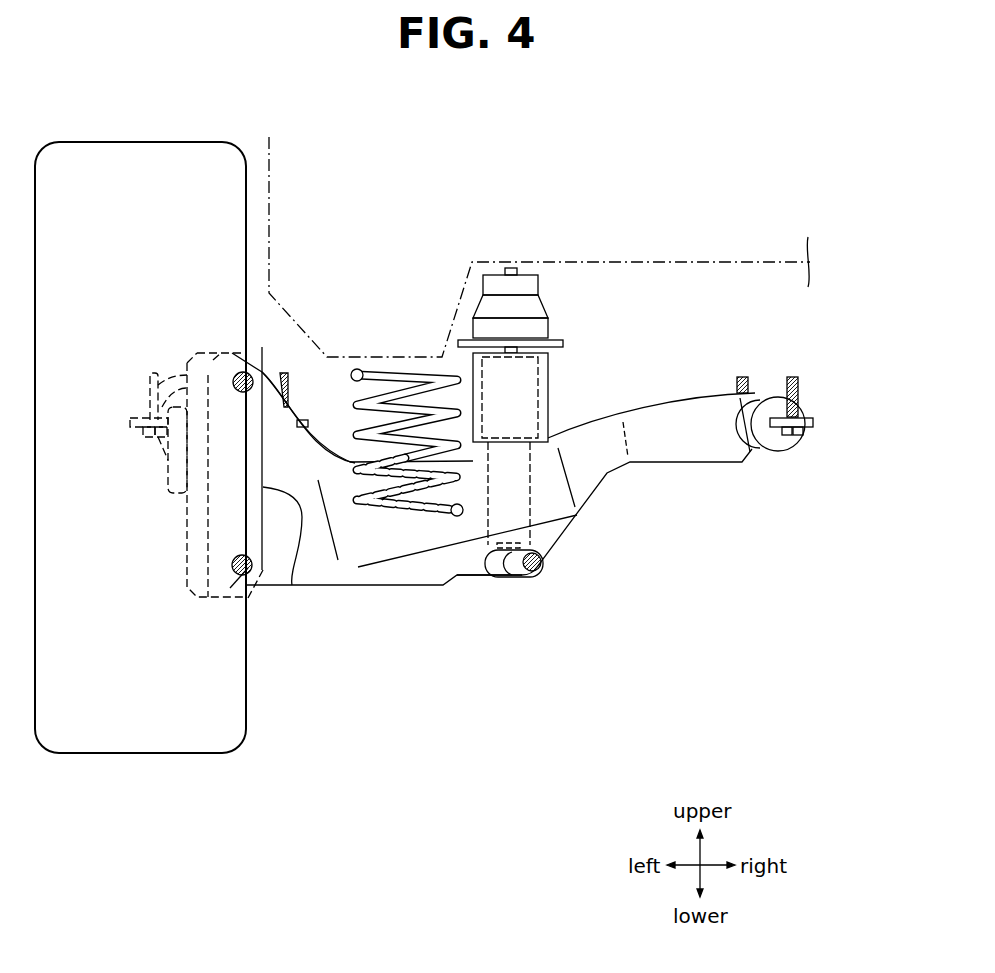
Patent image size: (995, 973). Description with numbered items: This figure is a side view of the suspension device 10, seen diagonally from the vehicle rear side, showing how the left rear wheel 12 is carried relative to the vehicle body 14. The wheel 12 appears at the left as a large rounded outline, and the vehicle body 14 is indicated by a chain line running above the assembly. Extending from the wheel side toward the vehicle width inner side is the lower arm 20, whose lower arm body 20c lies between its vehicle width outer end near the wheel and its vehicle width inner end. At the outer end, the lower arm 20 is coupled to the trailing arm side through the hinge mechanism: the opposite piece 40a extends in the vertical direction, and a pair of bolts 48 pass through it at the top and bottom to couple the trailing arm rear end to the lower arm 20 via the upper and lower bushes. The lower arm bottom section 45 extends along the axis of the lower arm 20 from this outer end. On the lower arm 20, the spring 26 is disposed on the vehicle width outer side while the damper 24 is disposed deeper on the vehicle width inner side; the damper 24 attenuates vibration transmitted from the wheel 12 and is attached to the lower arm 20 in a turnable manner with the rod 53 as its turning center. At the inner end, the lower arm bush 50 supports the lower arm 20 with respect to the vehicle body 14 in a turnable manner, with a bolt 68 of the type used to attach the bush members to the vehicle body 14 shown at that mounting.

The suspension device 10 is at (705, 165).
The wheel 12 is at (140, 142).
The vehicle body 14 is at (707, 262).
The lower arm 20 is at (412, 602).
The lower arm body 20c is at (463, 560).
The damper 24 is at (548, 390).
The spring 26 is at (366, 369).
The opposite piece 40a is at (293, 587).
The lower arm bottom section 45 is at (343, 587).
The bolt 48 is at (252, 380).
The lower arm bush 50 is at (770, 460).
The rod 53 is at (545, 562).
The bolt 68 is at (798, 391).